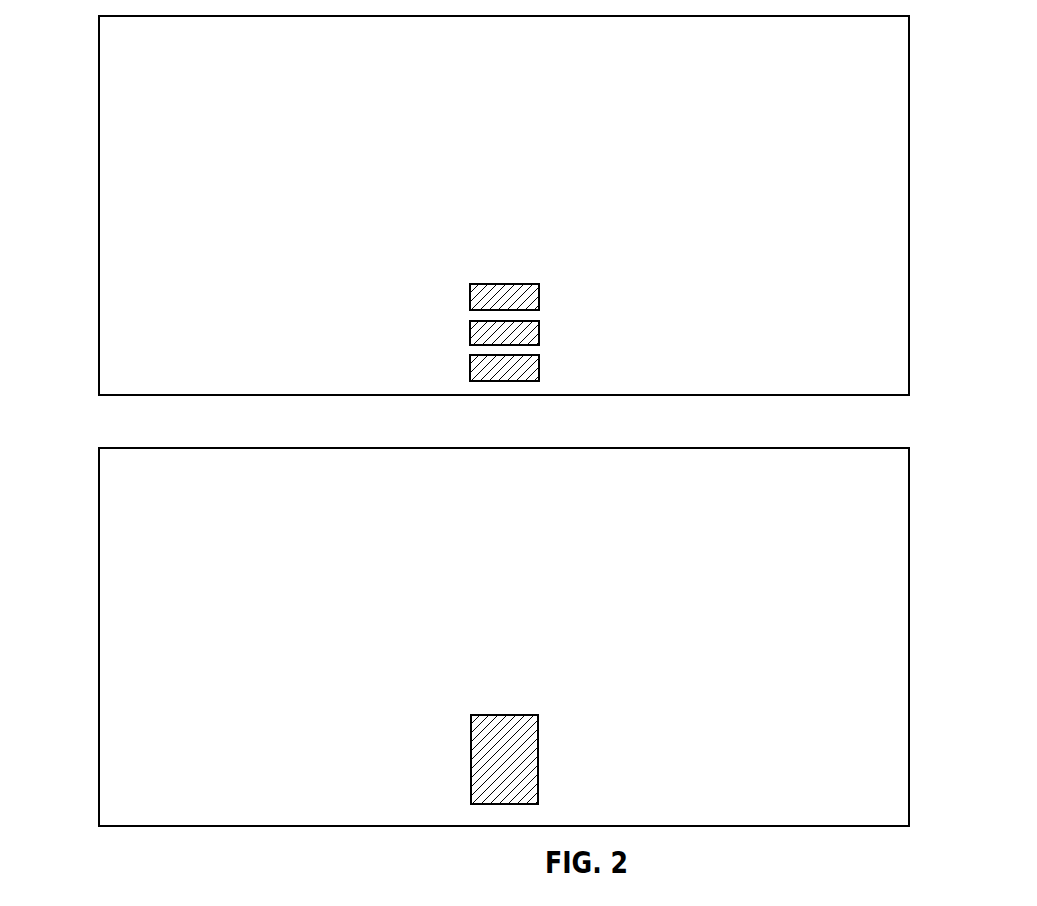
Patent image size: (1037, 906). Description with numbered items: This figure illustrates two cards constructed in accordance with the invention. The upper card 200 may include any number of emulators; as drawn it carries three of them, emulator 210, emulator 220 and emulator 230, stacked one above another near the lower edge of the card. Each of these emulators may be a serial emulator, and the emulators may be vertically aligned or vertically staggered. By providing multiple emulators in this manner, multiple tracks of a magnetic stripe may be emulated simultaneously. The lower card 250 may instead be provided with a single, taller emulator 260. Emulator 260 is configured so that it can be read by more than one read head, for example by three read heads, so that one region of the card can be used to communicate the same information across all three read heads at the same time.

The card 200 is at (99, 207).
The emulator 210 is at (482, 284).
The emulator 220 is at (483, 321).
The emulator 230 is at (483, 355).
The card 250 is at (99, 638).
The emulator 260 is at (471, 746).